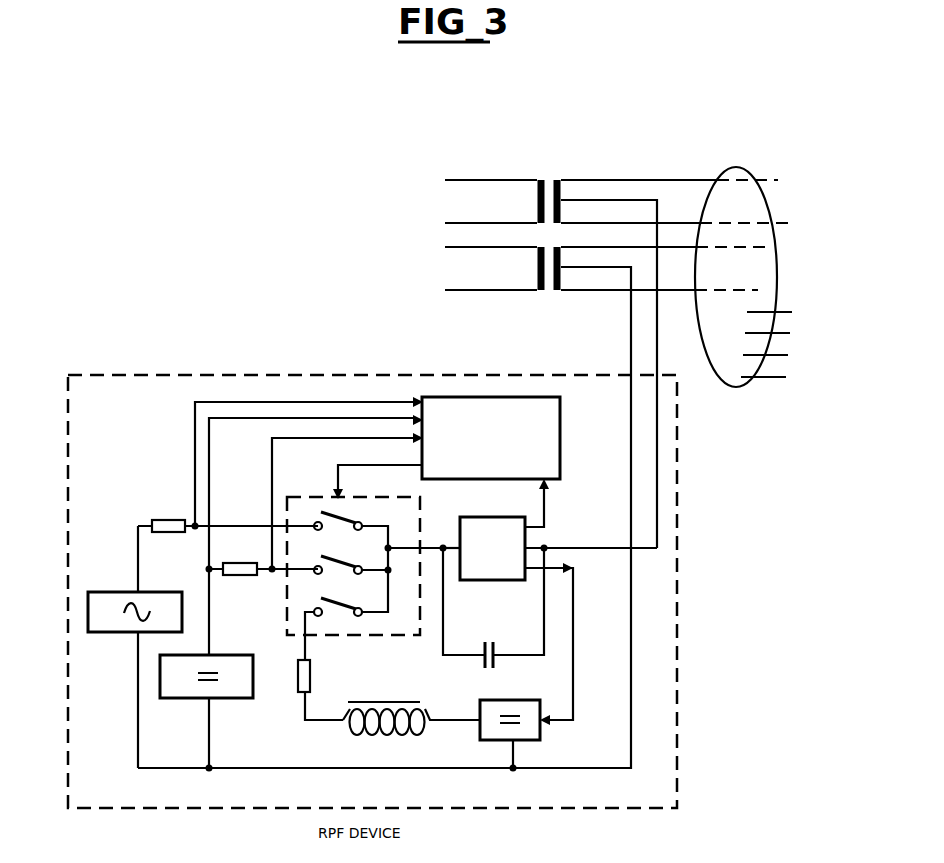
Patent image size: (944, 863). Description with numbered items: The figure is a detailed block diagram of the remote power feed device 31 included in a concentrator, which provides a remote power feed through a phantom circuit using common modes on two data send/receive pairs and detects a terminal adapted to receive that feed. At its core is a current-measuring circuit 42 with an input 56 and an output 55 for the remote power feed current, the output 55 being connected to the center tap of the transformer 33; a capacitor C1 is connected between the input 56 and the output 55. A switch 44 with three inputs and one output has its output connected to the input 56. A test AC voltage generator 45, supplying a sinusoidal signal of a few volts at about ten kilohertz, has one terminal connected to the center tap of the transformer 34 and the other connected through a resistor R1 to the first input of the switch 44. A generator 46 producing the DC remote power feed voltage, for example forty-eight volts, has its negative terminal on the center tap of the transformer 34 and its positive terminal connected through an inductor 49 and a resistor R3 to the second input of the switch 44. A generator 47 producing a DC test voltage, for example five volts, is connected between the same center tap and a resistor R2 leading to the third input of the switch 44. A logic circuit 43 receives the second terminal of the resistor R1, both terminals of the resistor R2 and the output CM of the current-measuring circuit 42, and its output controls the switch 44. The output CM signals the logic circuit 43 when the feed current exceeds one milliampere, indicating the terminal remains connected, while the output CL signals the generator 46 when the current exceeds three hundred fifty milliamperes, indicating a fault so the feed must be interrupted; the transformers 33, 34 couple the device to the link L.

The remote power feed device 31 is at (203, 375).
The transformer 33 is at (550, 180).
The transformer 34 is at (548, 292).
The current-measuring circuit 42 is at (527, 535).
The logic circuit 43 is at (562, 412).
The switch 44 is at (297, 497).
The test AC voltage generator 45 is at (103, 592).
The remote power feed generator 46 is at (478, 732).
The DC test voltage generator 47 is at (237, 655).
The inductor 49 is at (382, 737).
The output 55 is at (545, 548).
The input 56 is at (457, 540).
The resistor R1 is at (228, 515).
The resistor R2 is at (263, 559).
The resistor R3 is at (320, 690).
The capacitor C1 is at (493, 608).
The link L is at (736, 387).
The output CM is at (544, 503).
The output CL is at (575, 588).